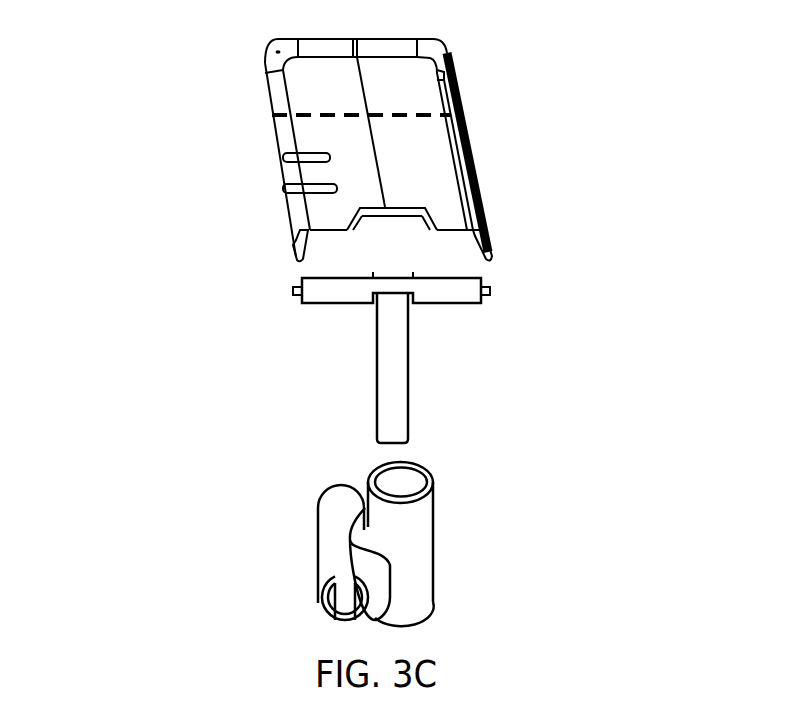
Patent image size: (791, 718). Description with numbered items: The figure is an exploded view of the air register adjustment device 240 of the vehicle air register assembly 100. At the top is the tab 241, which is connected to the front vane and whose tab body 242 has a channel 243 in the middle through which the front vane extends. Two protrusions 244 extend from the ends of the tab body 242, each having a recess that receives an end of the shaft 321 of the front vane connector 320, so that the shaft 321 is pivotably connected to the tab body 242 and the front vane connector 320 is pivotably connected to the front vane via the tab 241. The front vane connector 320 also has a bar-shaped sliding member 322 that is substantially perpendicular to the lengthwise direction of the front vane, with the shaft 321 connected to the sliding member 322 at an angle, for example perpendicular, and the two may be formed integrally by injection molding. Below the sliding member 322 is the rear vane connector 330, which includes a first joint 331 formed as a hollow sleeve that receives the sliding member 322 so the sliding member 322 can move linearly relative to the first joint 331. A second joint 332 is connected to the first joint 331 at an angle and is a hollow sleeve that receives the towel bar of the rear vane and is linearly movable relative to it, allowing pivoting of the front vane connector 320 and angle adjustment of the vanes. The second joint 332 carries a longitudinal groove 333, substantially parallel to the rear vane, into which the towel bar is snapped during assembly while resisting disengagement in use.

The vehicle air register assembly 100 is at (661, 111).
The air register adjustment device 240 is at (110, 356).
The tab 241 is at (259, 138).
The tab body 242 is at (435, 186).
The channel 243 is at (418, 112).
The protrusions 244 is at (487, 247).
The front vane connector 320 is at (455, 302).
The shaft 321 is at (315, 287).
The sliding member 322 is at (377, 362).
The rear vane connector 330 is at (437, 508).
The first joint 331 is at (423, 595).
The second joint 332 is at (333, 537).
The groove 333 is at (343, 605).